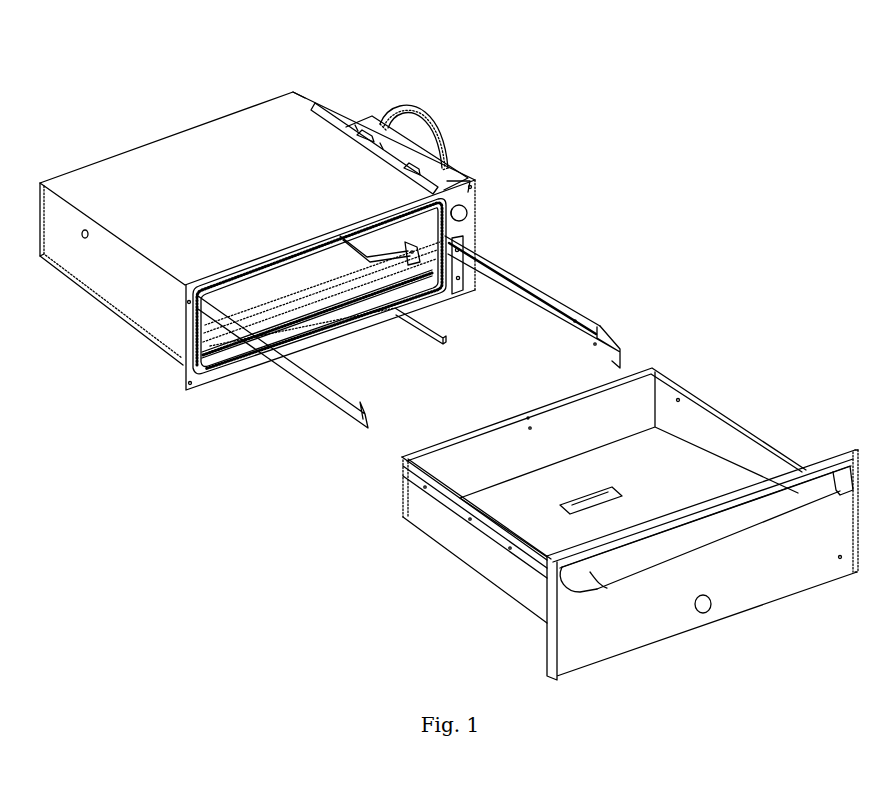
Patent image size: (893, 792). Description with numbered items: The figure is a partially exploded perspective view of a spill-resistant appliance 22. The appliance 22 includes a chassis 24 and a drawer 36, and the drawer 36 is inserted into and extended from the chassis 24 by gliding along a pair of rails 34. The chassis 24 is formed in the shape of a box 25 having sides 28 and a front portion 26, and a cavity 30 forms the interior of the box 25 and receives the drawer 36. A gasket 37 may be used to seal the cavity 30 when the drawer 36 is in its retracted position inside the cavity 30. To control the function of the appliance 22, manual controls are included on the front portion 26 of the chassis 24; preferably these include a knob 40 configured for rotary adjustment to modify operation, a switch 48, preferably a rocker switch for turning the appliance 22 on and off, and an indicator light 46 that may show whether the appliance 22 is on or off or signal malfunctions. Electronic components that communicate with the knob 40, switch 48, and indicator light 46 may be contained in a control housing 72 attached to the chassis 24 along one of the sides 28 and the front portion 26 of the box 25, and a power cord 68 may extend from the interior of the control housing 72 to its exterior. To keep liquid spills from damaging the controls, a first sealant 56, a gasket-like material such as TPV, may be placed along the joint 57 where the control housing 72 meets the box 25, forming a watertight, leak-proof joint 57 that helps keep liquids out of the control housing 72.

The appliance 22 is at (580, 185).
The chassis 24 is at (286, 92).
The box 25 is at (190, 142).
The front portion 26 is at (460, 194).
The sides 28 is at (115, 277).
The cavity 30 is at (342, 282).
The rails 34 is at (300, 381).
The drawer 36 is at (730, 393).
The gasket 37 is at (258, 276).
The knob 40 is at (468, 213).
The indicator light 46 is at (459, 284).
The switch 48 is at (458, 254).
The first sealant 56 is at (368, 140).
The joint 57 is at (413, 175).
The power cord 68 is at (413, 113).
The control housing 72 is at (462, 181).